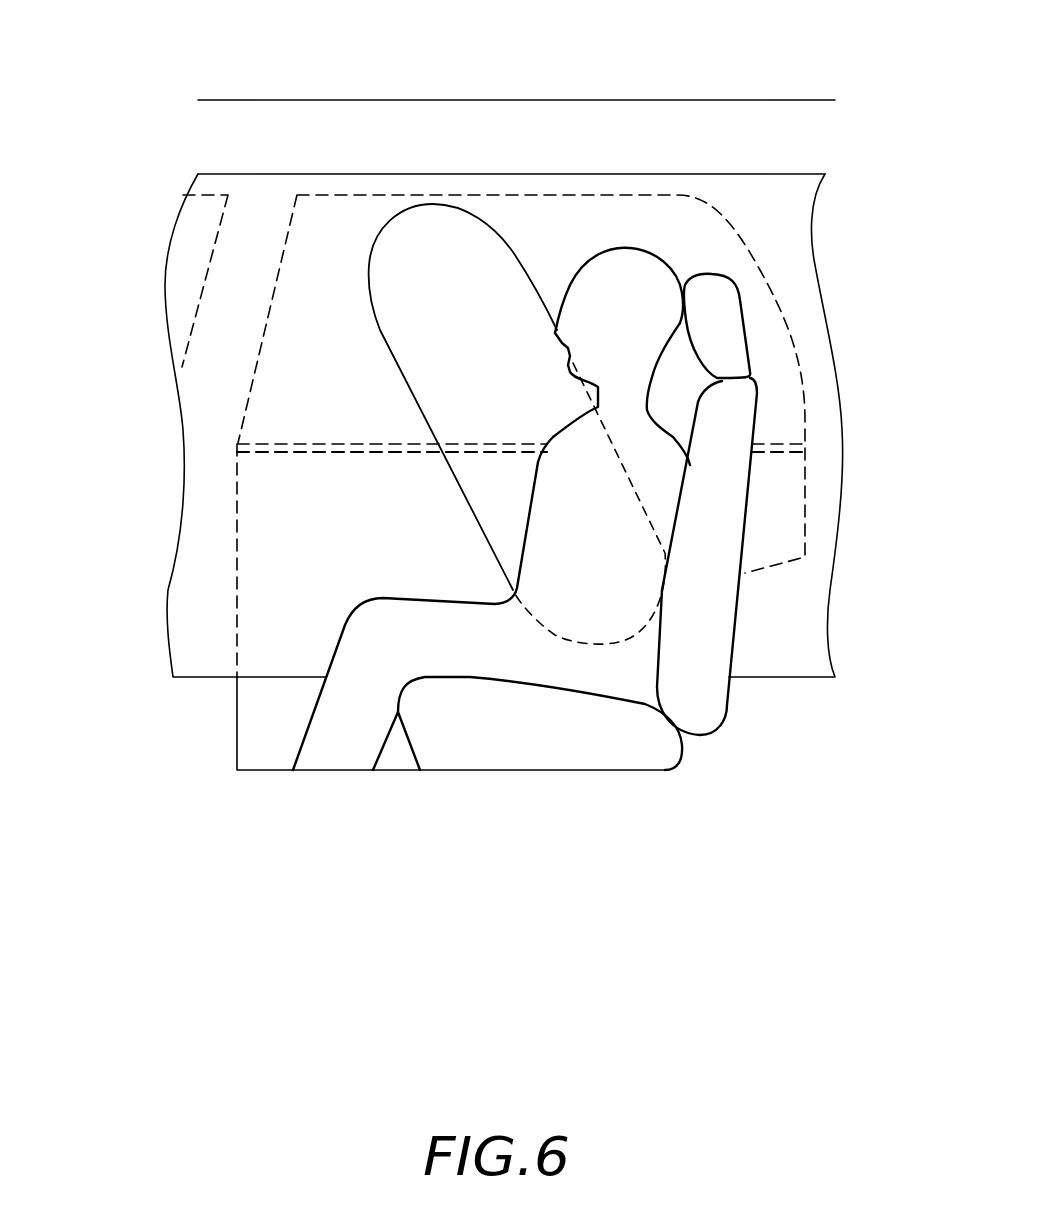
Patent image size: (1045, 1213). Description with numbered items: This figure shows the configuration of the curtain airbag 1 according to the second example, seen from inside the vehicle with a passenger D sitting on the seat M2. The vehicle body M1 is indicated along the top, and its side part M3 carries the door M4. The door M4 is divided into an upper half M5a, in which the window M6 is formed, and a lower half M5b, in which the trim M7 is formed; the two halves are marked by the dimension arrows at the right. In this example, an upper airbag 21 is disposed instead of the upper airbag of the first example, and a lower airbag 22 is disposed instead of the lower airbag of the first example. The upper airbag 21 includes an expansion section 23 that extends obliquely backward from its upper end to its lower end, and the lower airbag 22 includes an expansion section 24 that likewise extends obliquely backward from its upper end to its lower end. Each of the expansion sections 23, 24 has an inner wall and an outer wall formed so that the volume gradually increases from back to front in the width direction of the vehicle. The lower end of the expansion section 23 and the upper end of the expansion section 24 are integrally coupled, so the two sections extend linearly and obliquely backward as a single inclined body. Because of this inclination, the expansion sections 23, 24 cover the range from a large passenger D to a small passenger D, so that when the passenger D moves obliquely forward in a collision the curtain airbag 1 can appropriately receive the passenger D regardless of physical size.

The curtain airbag 1 is at (463, 175).
The upper airbag 21 is at (310, 238).
The lower airbag 22 is at (310, 628).
The expansion section 23 is at (437, 360).
The expansion section 24 is at (593, 632).
The passenger D is at (650, 250).
The vehicle body M1 is at (283, 100).
The seat M2 is at (742, 295).
The side part M3 is at (100, 292).
The door M4 is at (93, 365).
The upper half M5a is at (862, 196).
The lower half M5b is at (858, 770).
The window M6 is at (258, 427).
The trim M7 is at (260, 502).